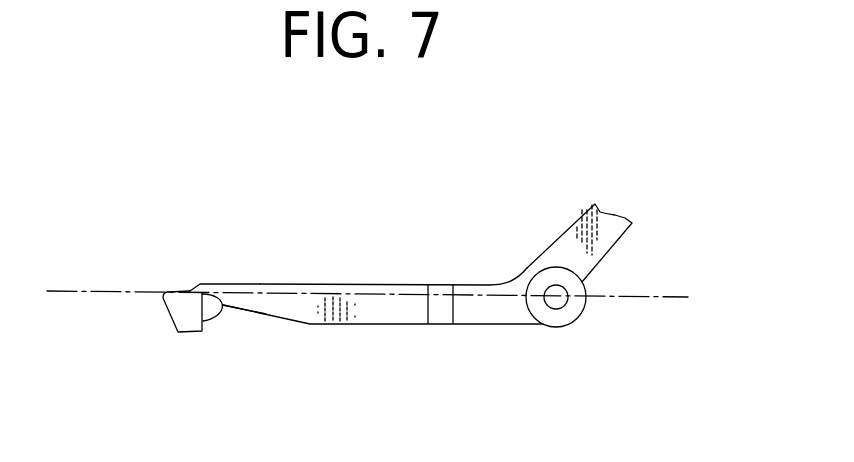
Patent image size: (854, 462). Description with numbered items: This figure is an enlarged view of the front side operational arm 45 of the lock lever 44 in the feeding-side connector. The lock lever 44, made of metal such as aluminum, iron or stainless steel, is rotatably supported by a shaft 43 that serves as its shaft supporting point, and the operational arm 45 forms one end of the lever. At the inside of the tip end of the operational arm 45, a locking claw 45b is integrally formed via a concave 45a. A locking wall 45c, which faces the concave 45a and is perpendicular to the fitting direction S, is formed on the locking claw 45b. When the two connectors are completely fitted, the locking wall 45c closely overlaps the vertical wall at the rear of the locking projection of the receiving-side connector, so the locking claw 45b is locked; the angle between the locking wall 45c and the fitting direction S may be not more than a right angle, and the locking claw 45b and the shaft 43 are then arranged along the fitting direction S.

The shaft 43 is at (557, 303).
The lock lever 44 is at (555, 245).
The front side operational arm 45 is at (313, 285).
The concave 45a is at (243, 302).
The locking claw 45b is at (177, 303).
The locking wall 45c is at (207, 330).
The fitting direction S is at (655, 297).